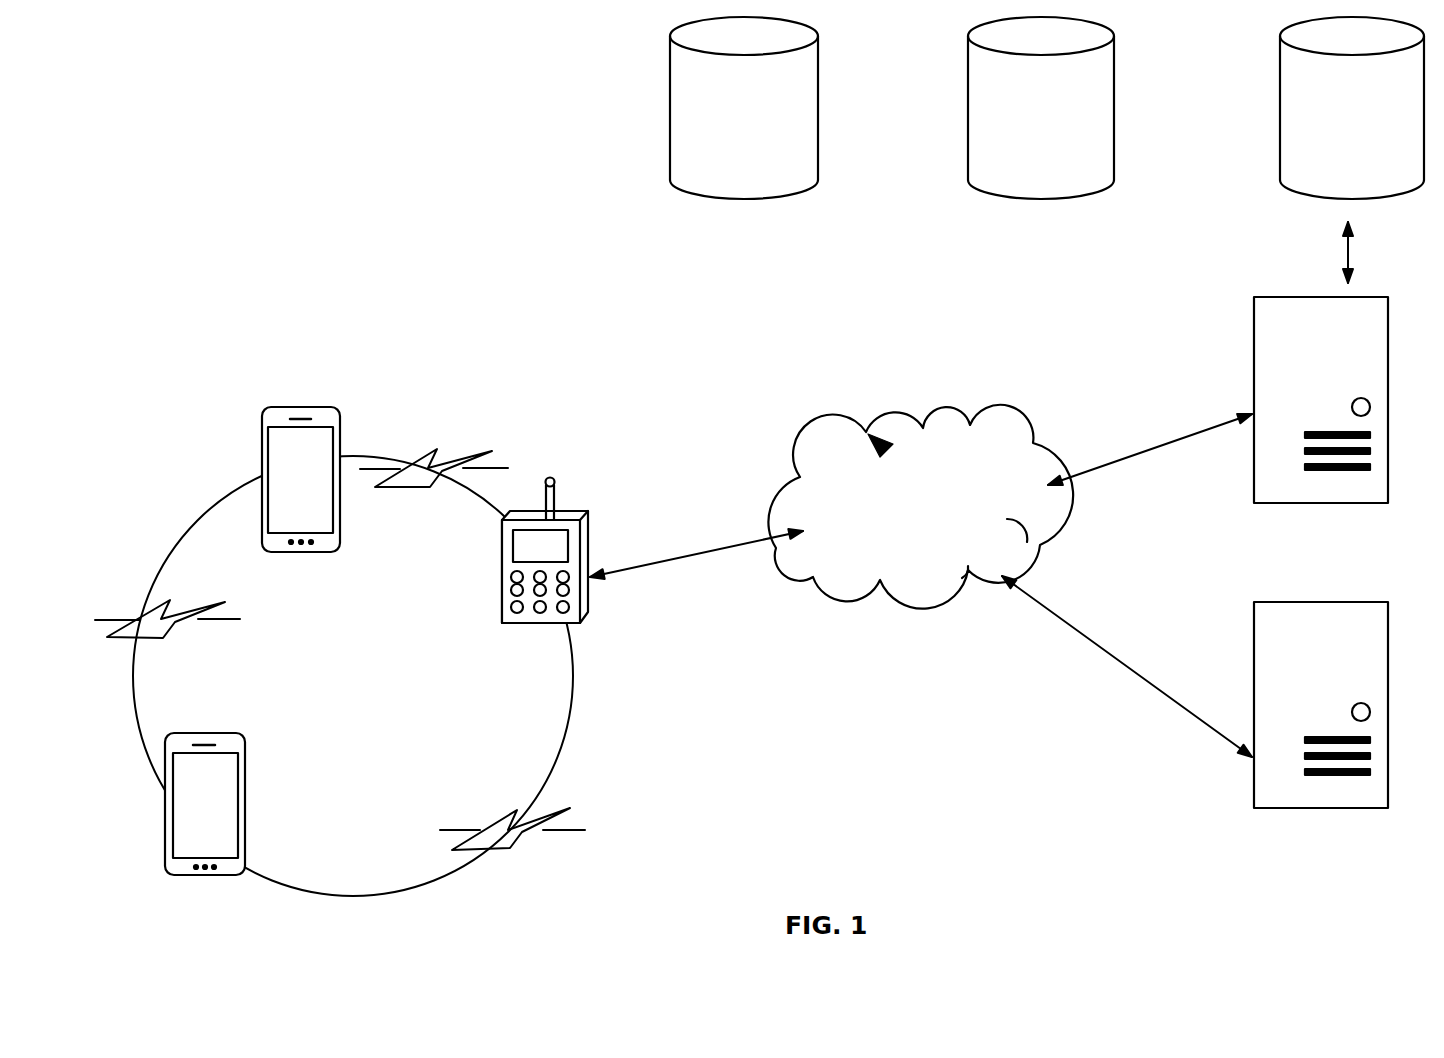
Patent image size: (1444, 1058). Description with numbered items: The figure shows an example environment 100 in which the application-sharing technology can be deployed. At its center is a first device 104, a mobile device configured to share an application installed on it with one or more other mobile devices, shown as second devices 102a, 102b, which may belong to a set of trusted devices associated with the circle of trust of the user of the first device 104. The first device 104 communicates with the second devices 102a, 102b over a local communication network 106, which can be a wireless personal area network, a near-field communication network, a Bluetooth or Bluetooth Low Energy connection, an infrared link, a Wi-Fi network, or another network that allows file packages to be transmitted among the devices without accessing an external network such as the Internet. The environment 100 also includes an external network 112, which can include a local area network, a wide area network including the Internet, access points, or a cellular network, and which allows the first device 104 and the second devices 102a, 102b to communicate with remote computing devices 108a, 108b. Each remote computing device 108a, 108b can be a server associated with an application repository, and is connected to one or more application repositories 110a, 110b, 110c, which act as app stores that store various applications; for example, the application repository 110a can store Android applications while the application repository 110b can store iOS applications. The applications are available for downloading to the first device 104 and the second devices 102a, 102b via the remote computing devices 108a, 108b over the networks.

The environment 100 is at (386, 118).
The second device 102a is at (501, 570).
The second device 102b is at (290, 404).
The first device 104 is at (198, 878).
The local communication network 106 is at (595, 837).
The remote computing device 108a is at (1252, 390).
The remote computing device 108b is at (1252, 708).
The application repository 110a is at (1279, 108).
The application repository 110b is at (968, 107).
The application repository 110c is at (670, 107).
The external network 112 is at (820, 436).